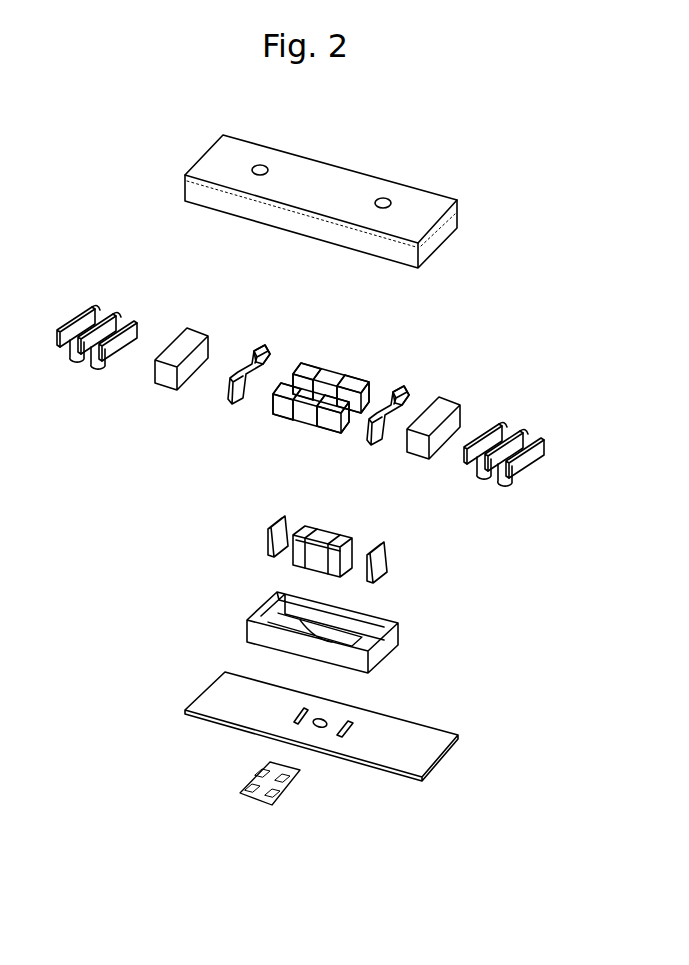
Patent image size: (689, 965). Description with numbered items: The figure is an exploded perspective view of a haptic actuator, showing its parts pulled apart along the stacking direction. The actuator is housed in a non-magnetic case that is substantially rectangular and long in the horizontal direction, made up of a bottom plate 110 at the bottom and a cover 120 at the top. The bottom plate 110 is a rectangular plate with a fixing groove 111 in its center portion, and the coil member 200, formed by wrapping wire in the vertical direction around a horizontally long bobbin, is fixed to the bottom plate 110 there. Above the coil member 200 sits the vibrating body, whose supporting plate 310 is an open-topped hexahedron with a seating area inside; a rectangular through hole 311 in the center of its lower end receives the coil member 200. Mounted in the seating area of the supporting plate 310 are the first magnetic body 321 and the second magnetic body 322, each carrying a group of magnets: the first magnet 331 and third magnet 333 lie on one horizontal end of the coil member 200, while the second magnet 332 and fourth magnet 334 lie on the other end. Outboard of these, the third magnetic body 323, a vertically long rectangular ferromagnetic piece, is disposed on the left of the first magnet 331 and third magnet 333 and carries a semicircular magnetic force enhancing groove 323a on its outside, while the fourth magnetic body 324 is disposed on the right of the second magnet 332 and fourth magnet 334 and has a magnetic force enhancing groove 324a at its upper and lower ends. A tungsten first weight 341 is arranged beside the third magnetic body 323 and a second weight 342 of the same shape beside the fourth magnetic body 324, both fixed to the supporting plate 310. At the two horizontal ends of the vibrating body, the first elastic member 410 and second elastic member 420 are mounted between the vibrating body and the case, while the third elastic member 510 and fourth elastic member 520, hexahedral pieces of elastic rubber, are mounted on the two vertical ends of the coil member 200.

The bottom plate 110 is at (432, 742).
The fixing groove 111 is at (351, 729).
The cover 120 is at (432, 204).
The coil member 200 is at (332, 537).
The supporting plate 310 is at (400, 636).
The through hole 311 is at (262, 624).
The first magnetic body 321 is at (338, 372).
The second magnetic body 322 is at (308, 424).
The third magnetic body 323 is at (230, 397).
The magnetic force enhancing groove 323a is at (250, 356).
The fourth magnetic body 324 is at (406, 397).
The magnetic force enhancing groove 324a is at (394, 397).
The first magnet 331 is at (312, 362).
The second magnet 332 is at (357, 380).
The third magnet 333 is at (277, 410).
The fourth magnet 334 is at (347, 426).
The first weight 341 is at (158, 376).
The second weight 342 is at (447, 419).
The first elastic member 410 is at (68, 360).
The second elastic member 420 is at (518, 435).
The third elastic member 510 is at (267, 550).
The fourth elastic member 520 is at (391, 559).